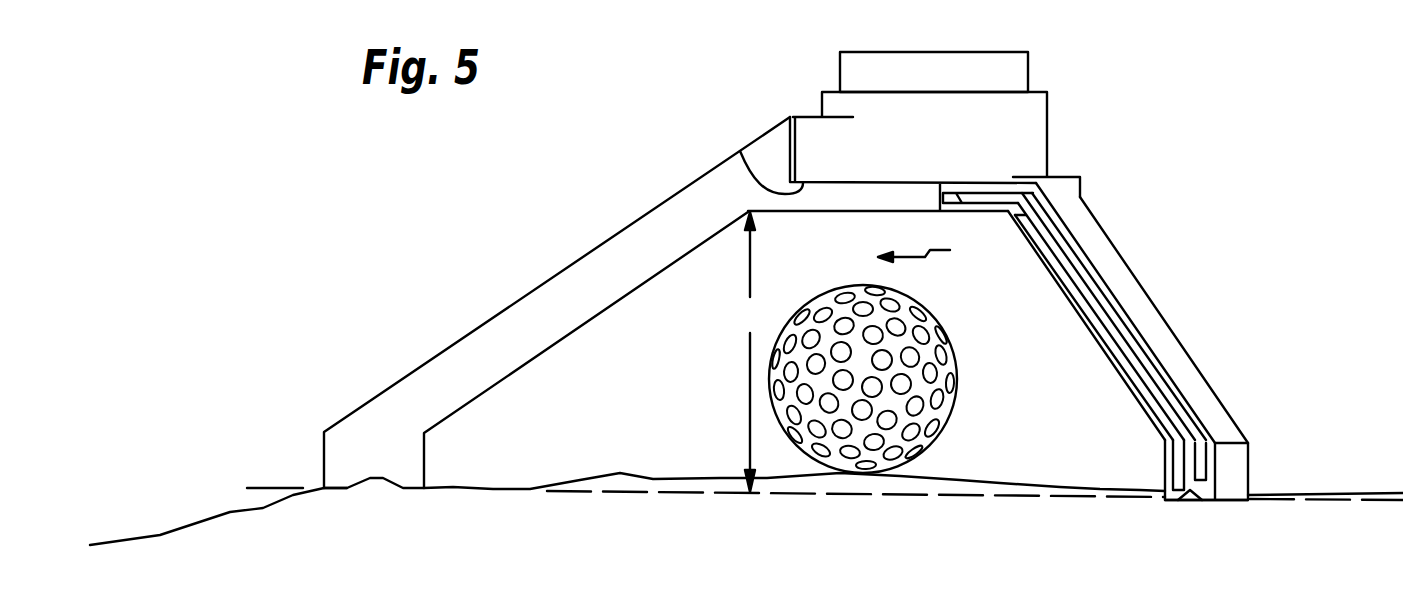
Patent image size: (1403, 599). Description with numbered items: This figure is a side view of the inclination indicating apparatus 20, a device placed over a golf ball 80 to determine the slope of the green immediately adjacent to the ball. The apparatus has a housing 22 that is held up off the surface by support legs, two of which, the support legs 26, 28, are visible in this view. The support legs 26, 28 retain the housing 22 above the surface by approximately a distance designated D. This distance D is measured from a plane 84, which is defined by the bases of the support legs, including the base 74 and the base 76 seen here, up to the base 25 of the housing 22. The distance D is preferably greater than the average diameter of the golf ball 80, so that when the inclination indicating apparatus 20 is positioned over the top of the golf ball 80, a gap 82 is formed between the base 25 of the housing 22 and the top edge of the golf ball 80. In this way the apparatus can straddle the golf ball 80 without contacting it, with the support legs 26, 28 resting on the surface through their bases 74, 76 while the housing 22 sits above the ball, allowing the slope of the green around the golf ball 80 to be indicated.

The inclination indicating apparatus 20 is at (1118, 115).
The housing 22 is at (833, 92).
The base of the housing 25 is at (749, 155).
The support leg 26 is at (1158, 334).
The support leg 28 is at (548, 290).
The base 74 is at (334, 490).
The base 76 is at (1166, 500).
The golf ball 80 is at (958, 402).
The gap 82 is at (938, 259).
The plane 84 is at (292, 487).